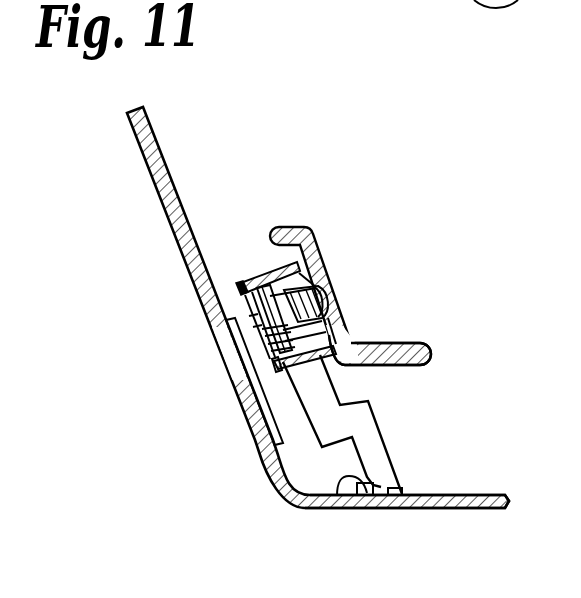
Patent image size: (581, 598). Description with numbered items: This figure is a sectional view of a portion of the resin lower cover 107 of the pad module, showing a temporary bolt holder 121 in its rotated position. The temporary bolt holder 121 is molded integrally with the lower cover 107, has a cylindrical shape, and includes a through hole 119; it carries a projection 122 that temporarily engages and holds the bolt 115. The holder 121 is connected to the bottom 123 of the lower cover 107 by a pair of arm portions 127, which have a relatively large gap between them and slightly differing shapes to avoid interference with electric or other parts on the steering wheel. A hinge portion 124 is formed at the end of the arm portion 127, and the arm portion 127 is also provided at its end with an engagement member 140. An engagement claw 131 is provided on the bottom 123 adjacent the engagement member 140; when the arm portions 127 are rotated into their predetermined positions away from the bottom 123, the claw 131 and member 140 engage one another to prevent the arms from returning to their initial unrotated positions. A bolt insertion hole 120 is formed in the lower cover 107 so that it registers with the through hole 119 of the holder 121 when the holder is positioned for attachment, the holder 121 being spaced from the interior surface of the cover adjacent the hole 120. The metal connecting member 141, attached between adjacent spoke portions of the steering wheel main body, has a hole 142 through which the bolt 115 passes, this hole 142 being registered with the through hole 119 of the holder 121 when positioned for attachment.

The lower cover 107 is at (150, 178).
The bolt 115 is at (268, 316).
The through hole 119 is at (268, 263).
The bolt insertion hole 120 is at (230, 368).
The temporary bolt holder 121 is at (242, 281).
The projection 122 is at (237, 286).
The bottom 123 is at (440, 509).
The hinge portion 124 is at (400, 484).
The arm portion 127 is at (363, 413).
The engagement claw 131 is at (337, 508).
The engagement member 140 is at (380, 508).
The connecting member 141 is at (317, 241).
The hole 142 is at (338, 327).